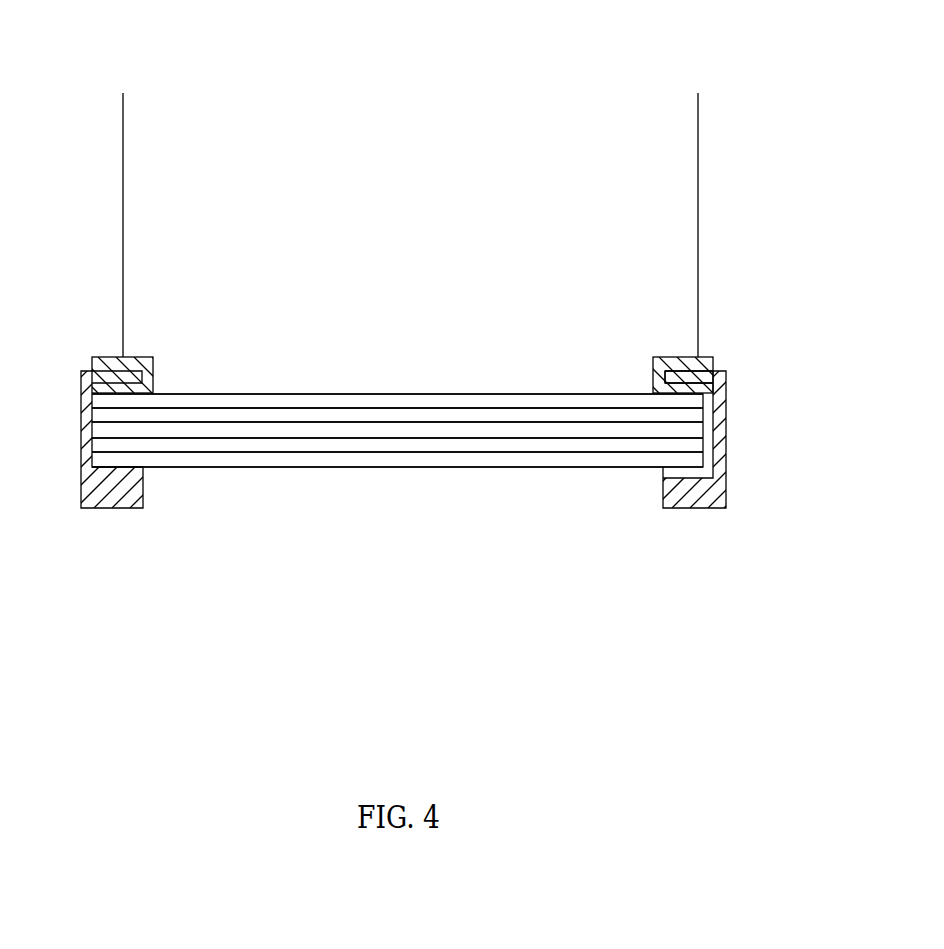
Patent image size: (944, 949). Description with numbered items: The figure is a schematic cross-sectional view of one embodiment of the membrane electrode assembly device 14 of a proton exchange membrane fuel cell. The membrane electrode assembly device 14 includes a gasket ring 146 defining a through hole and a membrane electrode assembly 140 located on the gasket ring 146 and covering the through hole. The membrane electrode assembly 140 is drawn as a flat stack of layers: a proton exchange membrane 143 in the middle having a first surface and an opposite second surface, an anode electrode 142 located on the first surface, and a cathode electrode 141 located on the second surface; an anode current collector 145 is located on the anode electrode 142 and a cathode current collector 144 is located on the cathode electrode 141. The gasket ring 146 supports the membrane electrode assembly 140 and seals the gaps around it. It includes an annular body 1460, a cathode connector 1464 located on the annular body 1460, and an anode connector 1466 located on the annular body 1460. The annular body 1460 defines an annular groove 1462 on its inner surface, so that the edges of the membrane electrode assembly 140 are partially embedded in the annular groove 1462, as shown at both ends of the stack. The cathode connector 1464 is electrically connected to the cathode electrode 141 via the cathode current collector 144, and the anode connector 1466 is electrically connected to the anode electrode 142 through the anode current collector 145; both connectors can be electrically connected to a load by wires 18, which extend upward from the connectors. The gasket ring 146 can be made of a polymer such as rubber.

The membrane electrode assembly device 14 is at (430, 340).
The wires 18 is at (698, 152).
The membrane electrode assembly 140 is at (397, 490).
The cathode electrode 141 is at (542, 415).
The anode electrode 142 is at (362, 443).
The proton exchange membrane 143 is at (457, 430).
The cathode current collector 144 is at (617, 402).
The anode current collector 145 is at (397, 482).
The gasket ring 146 is at (430, 383).
The annular body 1460 is at (665, 376).
The annular groove 1462 is at (712, 437).
The cathode connector 1464 is at (153, 357).
The anode connector 1466 is at (668, 350).